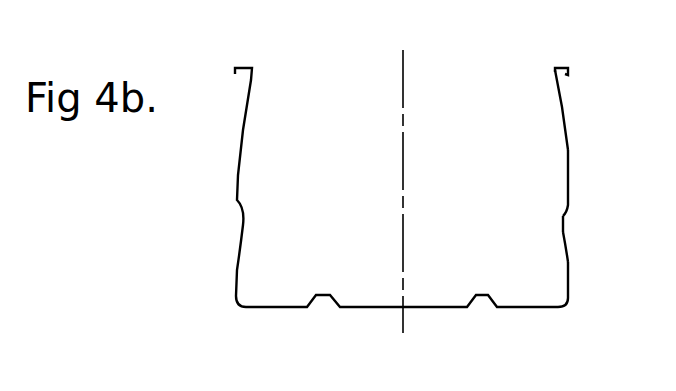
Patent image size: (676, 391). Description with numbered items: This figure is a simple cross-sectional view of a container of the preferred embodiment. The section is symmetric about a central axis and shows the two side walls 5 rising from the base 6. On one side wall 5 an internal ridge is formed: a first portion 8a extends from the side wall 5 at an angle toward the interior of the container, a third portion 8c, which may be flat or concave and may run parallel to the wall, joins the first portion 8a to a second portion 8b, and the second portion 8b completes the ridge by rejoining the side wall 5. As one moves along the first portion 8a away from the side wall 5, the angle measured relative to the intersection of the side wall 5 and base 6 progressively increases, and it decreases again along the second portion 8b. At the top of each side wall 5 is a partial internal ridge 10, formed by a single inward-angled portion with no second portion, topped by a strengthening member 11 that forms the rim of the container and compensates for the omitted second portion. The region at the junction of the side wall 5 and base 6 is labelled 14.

The side wall 5 is at (236, 185).
The base 6 is at (393, 307).
The first portion 8a is at (568, 258).
The second portion 8b is at (568, 205).
The third portion 8c is at (563, 221).
The partial internal ridge 10 is at (562, 107).
The strengthening member 11 is at (568, 70).
The bottom corner 14 is at (568, 305).